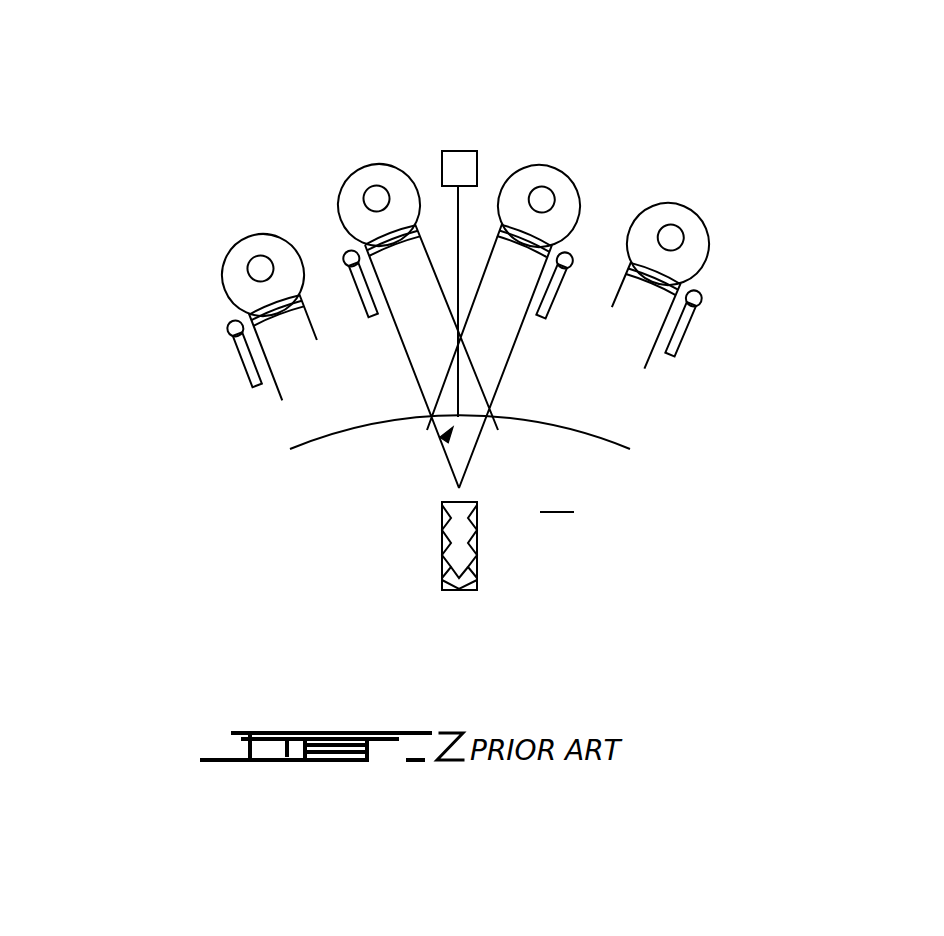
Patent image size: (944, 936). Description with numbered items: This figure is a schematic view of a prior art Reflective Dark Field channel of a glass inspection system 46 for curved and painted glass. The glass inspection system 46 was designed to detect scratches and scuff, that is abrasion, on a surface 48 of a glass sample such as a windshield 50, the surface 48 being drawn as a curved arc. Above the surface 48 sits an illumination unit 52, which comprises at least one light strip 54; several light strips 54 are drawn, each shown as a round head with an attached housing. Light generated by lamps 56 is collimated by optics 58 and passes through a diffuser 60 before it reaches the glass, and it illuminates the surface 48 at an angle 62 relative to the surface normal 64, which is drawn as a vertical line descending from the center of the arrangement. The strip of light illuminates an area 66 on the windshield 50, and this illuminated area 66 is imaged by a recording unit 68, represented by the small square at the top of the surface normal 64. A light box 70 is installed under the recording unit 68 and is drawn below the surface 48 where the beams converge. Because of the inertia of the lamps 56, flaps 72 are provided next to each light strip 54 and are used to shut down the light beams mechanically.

The glass inspection system 46 is at (145, 122).
The surface 48 is at (593, 430).
The windshield 50 is at (307, 445).
The illumination unit 52 is at (662, 93).
The light strip 54 is at (267, 233).
The lamps 56 is at (666, 232).
The optics 58 is at (690, 265).
The diffuser 60 is at (652, 290).
The angle 62 is at (440, 445).
The surface normal 64 is at (457, 210).
The area 66 is at (557, 497).
The recording unit 68 is at (460, 162).
The light box 70 is at (459, 590).
The flaps 72 is at (683, 332).